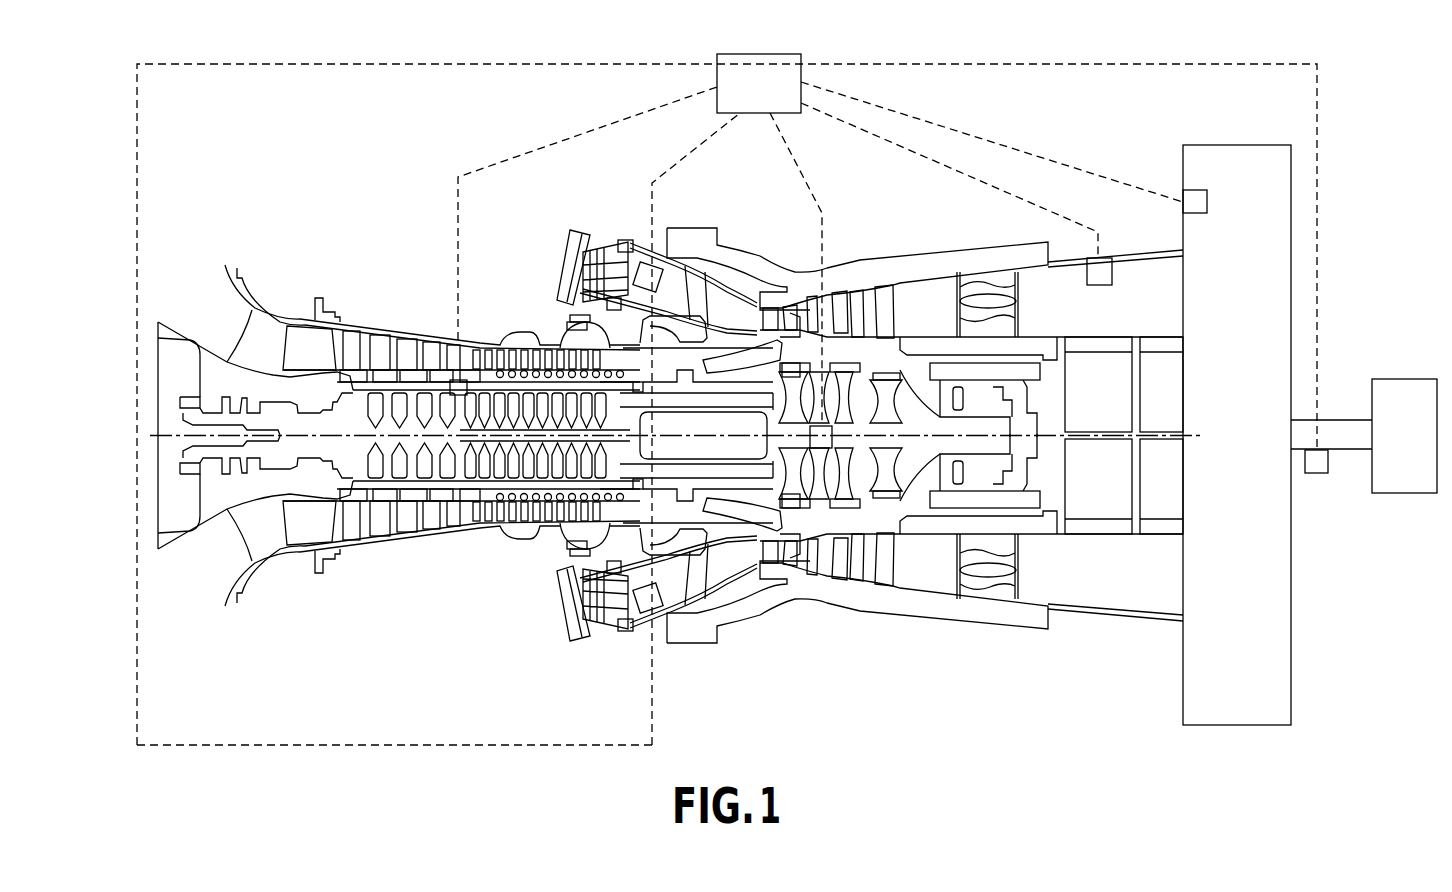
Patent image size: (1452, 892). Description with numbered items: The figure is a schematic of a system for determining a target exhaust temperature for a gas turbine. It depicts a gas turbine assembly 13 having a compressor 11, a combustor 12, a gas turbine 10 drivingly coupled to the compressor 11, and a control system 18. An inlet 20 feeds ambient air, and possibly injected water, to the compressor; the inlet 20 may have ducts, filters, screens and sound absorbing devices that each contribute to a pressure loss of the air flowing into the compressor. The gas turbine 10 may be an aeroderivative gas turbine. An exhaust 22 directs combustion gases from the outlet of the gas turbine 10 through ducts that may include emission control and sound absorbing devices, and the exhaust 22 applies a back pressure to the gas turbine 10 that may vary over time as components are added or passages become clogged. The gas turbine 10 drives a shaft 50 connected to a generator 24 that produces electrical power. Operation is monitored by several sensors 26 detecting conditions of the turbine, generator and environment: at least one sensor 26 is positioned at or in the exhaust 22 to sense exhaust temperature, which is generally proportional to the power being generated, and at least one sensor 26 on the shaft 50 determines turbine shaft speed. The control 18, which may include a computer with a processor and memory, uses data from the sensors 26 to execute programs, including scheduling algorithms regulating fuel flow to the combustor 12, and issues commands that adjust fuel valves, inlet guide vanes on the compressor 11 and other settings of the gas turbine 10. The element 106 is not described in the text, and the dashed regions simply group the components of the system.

The gas turbine 10 is at (857, 267).
The compressor 11 is at (279, 263).
The combustor 12 is at (629, 211).
The gas turbine assembly 13 is at (427, 208).
The control system 18 is at (744, 95).
The inlet 20 is at (126, 405).
The exhaust 22 is at (1223, 179).
The generator 24 is at (1390, 447).
The sensor 26 is at (657, 270).
The shaft 50 is at (1343, 420).
The turbine section 106 is at (415, 598).